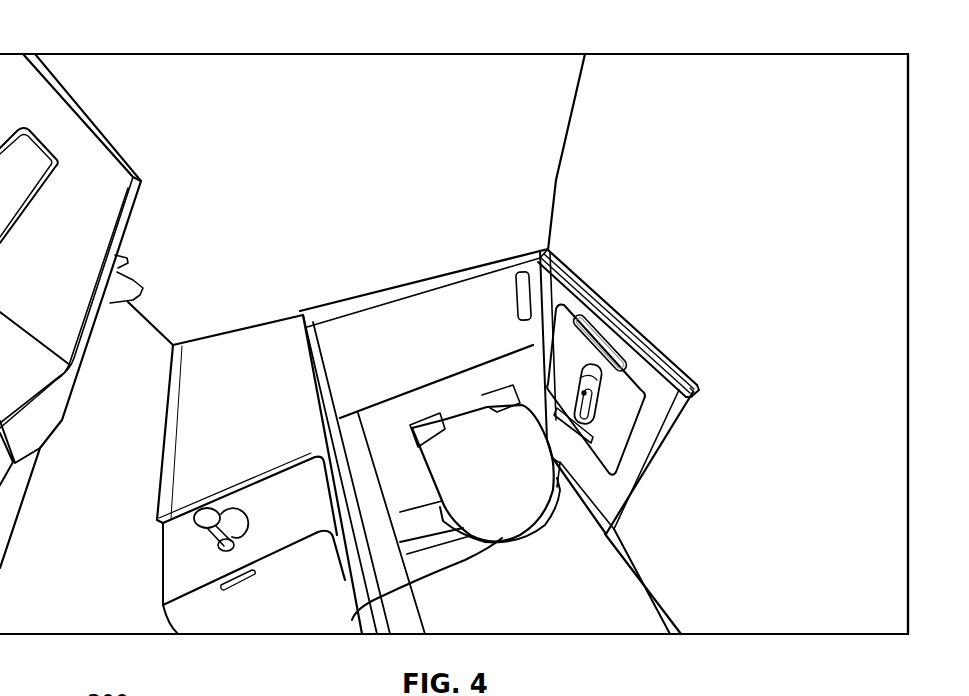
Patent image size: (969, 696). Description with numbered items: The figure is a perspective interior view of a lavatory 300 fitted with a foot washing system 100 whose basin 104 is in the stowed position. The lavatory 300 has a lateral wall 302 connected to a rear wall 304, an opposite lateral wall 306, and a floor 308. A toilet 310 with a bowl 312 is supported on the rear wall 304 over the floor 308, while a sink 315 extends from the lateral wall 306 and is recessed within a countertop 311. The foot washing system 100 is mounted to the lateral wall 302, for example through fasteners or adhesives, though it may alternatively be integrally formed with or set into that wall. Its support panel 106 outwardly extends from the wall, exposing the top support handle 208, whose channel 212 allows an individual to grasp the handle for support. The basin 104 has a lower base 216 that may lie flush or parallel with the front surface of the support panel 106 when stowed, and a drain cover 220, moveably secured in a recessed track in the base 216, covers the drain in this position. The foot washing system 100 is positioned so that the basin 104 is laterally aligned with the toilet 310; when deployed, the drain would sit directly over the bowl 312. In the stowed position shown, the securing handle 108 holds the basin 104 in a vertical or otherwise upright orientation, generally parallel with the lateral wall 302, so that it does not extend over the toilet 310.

The foot washing system 100 is at (646, 451).
The basin 104 is at (650, 347).
The support panel 106 is at (617, 492).
The securing handle 108 is at (614, 400).
The top support handle 208 is at (668, 350).
The channel 212 is at (689, 392).
The lower base 216 is at (620, 437).
The drain cover 220 is at (540, 252).
The lavatory 300 is at (237, 73).
The lateral wall 302 is at (763, 104).
The rear wall 304 is at (453, 108).
The opposite lateral wall 306 is at (40, 65).
The floor 308 is at (623, 617).
The toilet 310 is at (471, 442).
The countertop 311 is at (238, 392).
The bowl 312 is at (352, 620).
The sink 315 is at (278, 610).